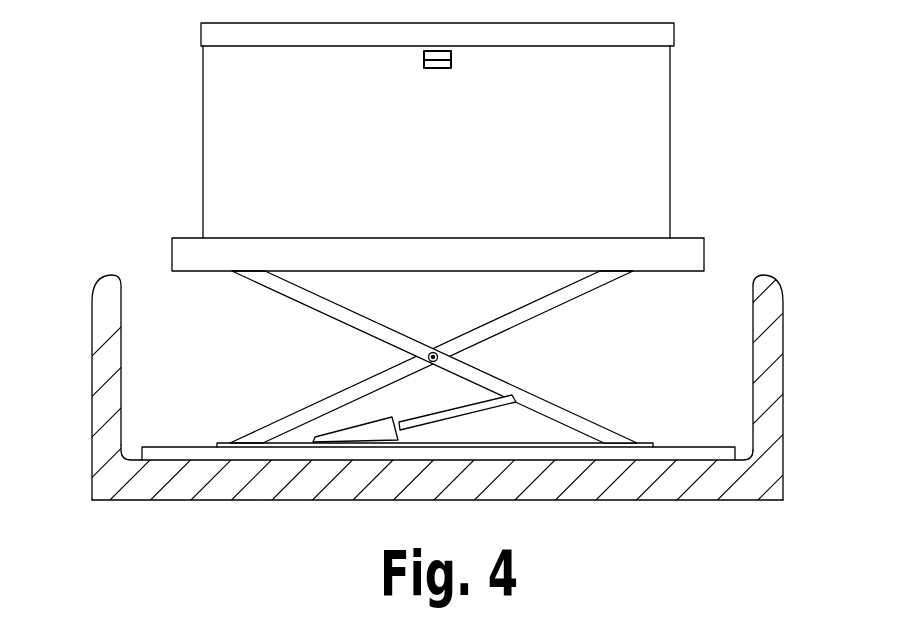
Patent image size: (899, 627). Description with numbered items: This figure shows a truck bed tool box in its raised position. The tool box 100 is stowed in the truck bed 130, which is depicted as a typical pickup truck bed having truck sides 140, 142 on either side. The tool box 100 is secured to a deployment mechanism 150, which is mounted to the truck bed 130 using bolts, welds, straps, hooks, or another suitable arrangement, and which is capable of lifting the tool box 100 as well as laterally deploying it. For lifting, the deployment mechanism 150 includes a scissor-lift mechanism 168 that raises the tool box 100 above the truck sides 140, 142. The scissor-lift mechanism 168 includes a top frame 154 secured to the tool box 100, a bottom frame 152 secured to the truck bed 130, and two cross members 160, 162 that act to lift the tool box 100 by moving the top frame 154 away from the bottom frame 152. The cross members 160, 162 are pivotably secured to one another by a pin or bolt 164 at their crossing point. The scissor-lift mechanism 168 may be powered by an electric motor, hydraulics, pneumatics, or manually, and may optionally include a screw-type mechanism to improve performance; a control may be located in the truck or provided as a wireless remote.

The tool box 100 is at (668, 100).
The truck bed 130 is at (648, 492).
The truck side 140 is at (783, 337).
The truck side 142 is at (92, 335).
The deployment mechanism 150 is at (112, 456).
The bottom frame 152 is at (712, 445).
The top frame 154 is at (698, 262).
The cross member 160 is at (435, 359).
The cross member 162 is at (545, 310).
The pin or bolt 164 is at (433, 352).
The scissor-lift mechanism 168 is at (215, 345).